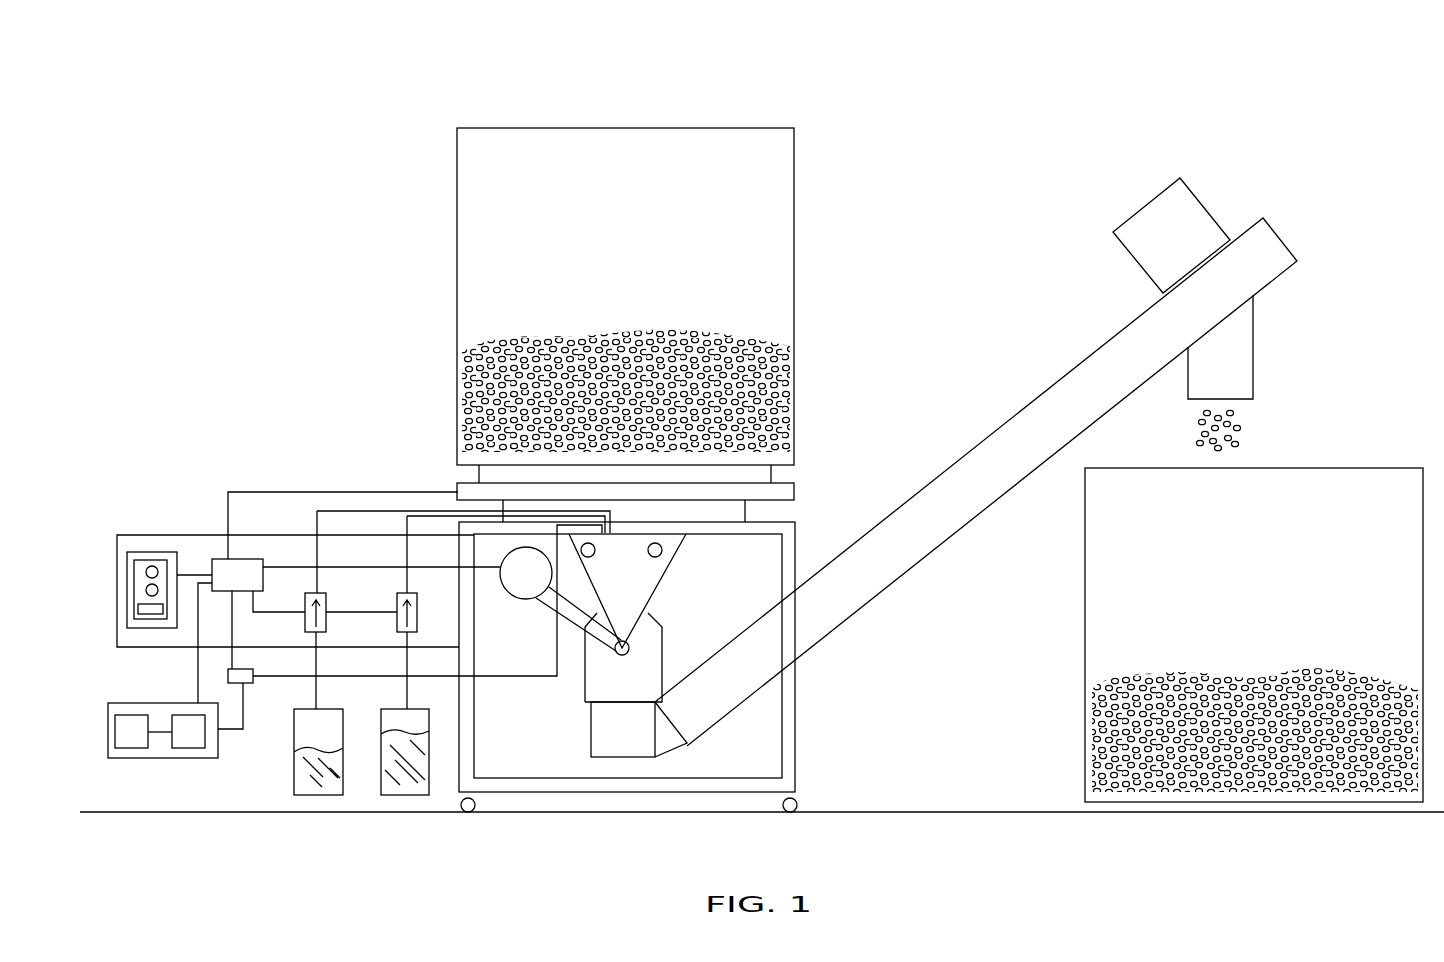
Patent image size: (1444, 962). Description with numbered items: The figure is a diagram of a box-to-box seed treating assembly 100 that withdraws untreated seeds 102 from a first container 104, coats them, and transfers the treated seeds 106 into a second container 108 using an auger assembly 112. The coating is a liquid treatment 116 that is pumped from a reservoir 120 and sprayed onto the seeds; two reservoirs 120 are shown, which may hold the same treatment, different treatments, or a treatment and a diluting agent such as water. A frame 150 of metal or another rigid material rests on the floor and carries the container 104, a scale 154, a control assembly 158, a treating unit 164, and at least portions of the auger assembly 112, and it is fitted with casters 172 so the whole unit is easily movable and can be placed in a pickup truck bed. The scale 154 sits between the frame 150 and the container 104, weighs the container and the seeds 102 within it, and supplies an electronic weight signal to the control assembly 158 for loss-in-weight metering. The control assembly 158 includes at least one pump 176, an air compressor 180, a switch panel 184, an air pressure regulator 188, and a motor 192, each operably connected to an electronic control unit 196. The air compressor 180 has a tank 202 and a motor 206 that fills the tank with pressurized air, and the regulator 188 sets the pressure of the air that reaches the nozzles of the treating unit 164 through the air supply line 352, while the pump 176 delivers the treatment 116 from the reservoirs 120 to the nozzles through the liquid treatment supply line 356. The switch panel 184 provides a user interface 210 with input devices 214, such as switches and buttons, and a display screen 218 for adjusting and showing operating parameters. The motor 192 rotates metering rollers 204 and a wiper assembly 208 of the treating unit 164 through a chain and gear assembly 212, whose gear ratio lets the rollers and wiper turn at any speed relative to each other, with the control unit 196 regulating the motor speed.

The seed treating assembly 100 is at (1033, 92).
The untreated seeds 102 is at (568, 316).
The first container 104 is at (758, 127).
The treated seeds 106 is at (1222, 652).
The second container 108 is at (1398, 467).
The auger assembly 112 is at (1012, 410).
The liquid treatment 116 is at (388, 783).
The reservoir 120 is at (294, 730).
The frame 150 is at (797, 695).
The scale 154 is at (796, 494).
The control assembly 158 is at (193, 535).
The treating unit 164 is at (665, 601).
The casters 172 is at (798, 802).
The pump 176 is at (397, 600).
The air compressor 180 is at (143, 758).
The switch panel 184 is at (127, 615).
The air pressure regulator 188 is at (270, 692).
The motor 192 is at (500, 590).
The electronic control unit 196 is at (247, 558).
The tank 202 is at (115, 732).
The metering rollers 204 is at (650, 555).
The motor 206 is at (207, 742).
The wiper assembly 208 is at (638, 675).
The user interface 210 is at (134, 541).
The chain and gear assembly 212 is at (640, 632).
The input devices 214 is at (152, 566).
The display screen 218 is at (160, 615).
The air supply line 352 is at (500, 678).
The liquid treatment supply line 356 is at (433, 515).